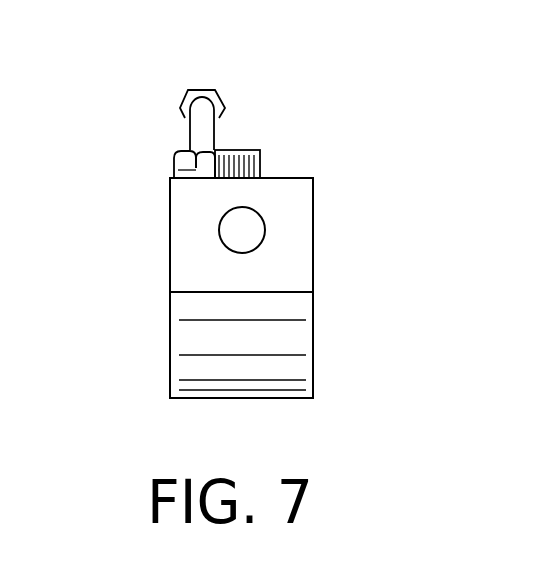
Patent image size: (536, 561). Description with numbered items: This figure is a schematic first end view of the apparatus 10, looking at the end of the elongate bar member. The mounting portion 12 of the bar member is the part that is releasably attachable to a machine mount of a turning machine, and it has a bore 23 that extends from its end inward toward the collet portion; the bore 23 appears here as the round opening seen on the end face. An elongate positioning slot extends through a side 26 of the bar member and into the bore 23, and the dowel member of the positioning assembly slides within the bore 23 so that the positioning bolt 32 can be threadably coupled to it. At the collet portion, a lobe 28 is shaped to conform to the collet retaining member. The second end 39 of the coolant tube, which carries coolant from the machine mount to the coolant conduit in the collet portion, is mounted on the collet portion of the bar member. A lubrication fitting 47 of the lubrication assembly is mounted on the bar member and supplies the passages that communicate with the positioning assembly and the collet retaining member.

The lighter 10 is at (138, 108).
The mounting portion 12 is at (190, 262).
The bore 23 is at (262, 243).
The side 26 is at (292, 178).
The lobe 28 is at (250, 370).
The positioning bolt 32 is at (238, 150).
The second end 39 is at (210, 132).
The ignition actuator 47 is at (192, 155).